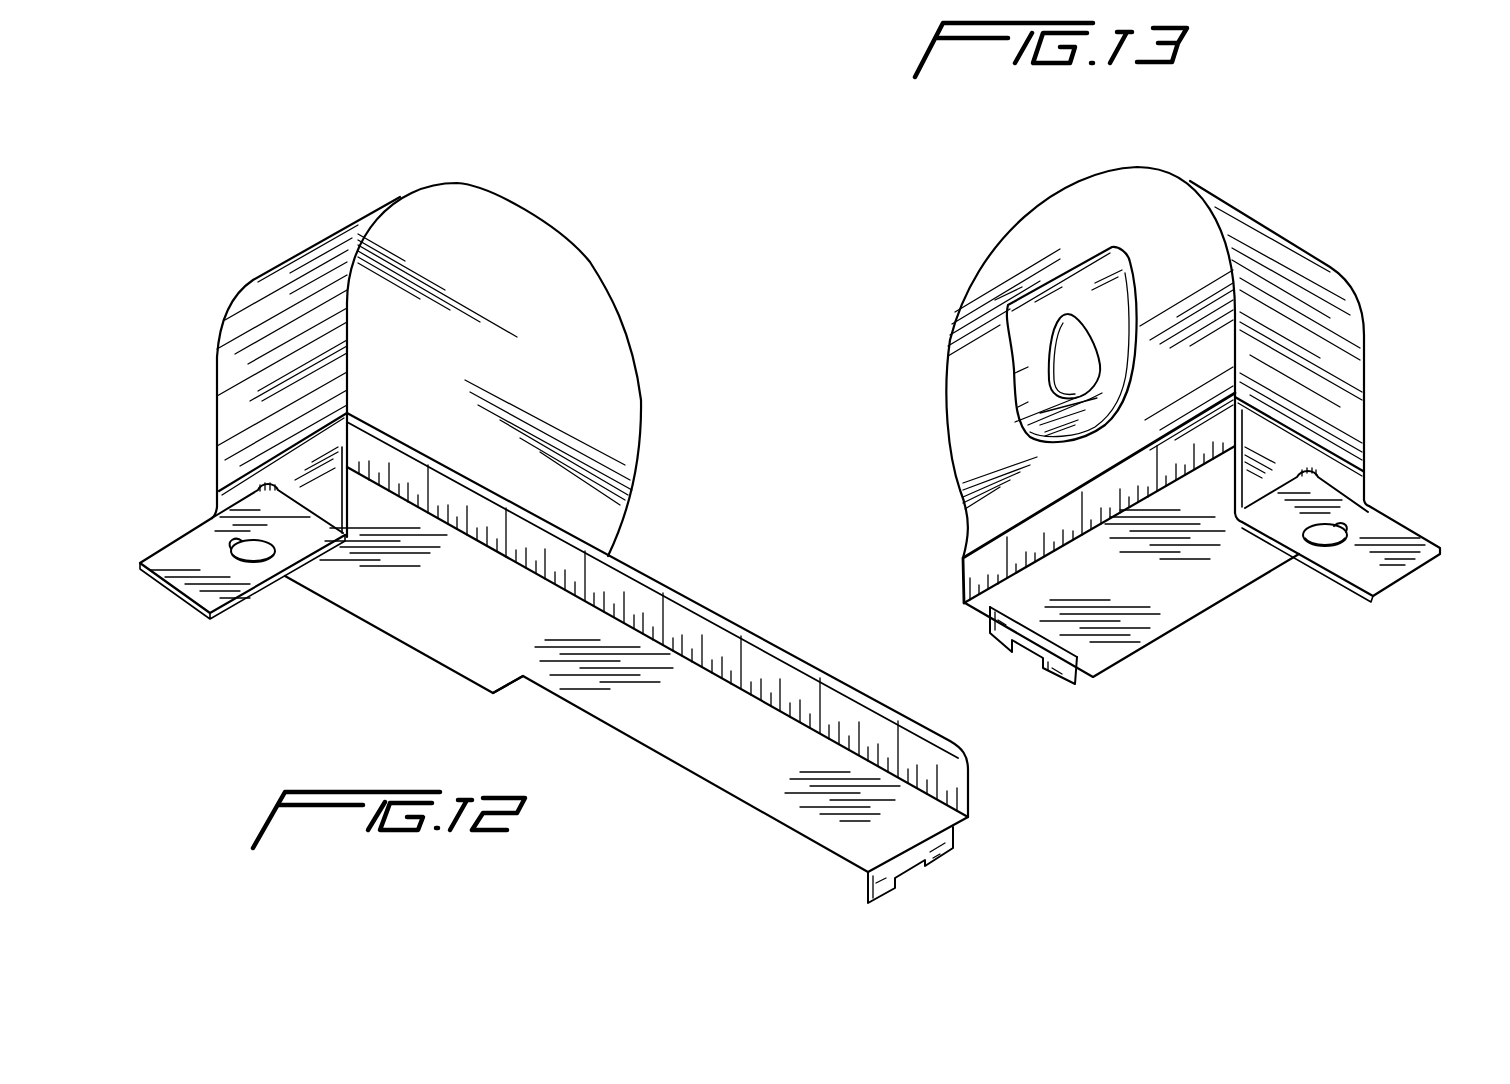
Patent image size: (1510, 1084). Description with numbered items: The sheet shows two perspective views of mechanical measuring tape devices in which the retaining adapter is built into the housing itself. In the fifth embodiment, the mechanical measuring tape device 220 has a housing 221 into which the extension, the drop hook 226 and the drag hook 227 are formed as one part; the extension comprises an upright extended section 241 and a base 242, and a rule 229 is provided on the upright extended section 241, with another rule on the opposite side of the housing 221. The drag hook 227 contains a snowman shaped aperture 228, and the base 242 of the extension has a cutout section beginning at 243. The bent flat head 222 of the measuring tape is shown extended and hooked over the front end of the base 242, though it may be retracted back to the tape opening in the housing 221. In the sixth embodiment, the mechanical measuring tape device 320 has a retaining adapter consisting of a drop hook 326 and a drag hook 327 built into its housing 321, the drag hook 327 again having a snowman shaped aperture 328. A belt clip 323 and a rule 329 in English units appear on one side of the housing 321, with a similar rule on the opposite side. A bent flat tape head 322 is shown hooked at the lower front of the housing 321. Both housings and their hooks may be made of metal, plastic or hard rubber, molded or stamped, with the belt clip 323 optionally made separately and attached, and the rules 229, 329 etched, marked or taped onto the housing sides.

In FIG. 12, the mechanical measuring tape device 220 is at (216, 322).
In FIG. 12, the housing 221 is at (593, 312).
In FIG. 12, the bent flat head 222 is at (943, 865).
In FIG. 12, the drop hook 226 is at (360, 517).
In FIG. 12, the drag hook 227 is at (170, 540).
In FIG. 12, the snowman shaped aperture 228 is at (252, 555).
In FIG. 12, the rule 229 is at (678, 615).
In FIG. 12, the upright extended section 241 is at (838, 686).
In FIG. 12, the base 242 is at (770, 792).
In FIG. 12, the cutout section beginning 243 is at (516, 681).
In FIG. 13, the mechanical measuring tape device 320 is at (945, 368).
In FIG. 13, the housing 321 is at (1183, 207).
In FIG. 13, the mounting tabs 322 is at (1063, 683).
In FIG. 13, the belt clip 323 is at (1020, 323).
In FIG. 13, the drop hook 326 is at (1235, 478).
In FIG. 13, the drag hook 327 is at (1408, 525).
In FIG. 13, the snowman shaped aperture 328 is at (1325, 540).
In FIG. 13, the rule 329 is at (958, 558).